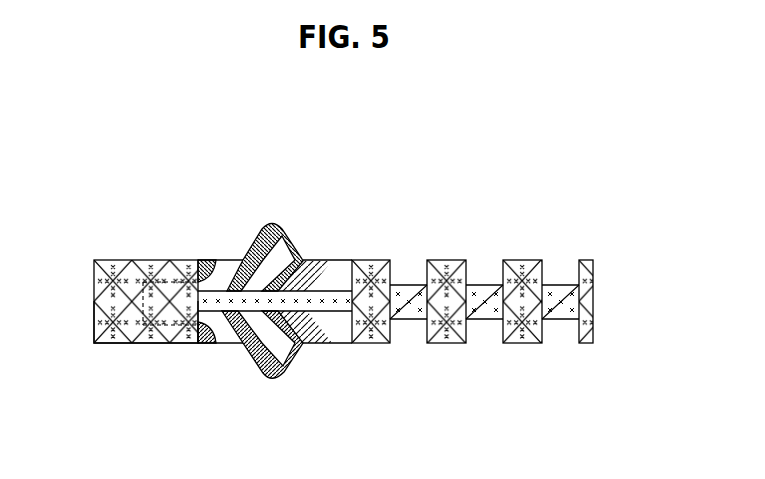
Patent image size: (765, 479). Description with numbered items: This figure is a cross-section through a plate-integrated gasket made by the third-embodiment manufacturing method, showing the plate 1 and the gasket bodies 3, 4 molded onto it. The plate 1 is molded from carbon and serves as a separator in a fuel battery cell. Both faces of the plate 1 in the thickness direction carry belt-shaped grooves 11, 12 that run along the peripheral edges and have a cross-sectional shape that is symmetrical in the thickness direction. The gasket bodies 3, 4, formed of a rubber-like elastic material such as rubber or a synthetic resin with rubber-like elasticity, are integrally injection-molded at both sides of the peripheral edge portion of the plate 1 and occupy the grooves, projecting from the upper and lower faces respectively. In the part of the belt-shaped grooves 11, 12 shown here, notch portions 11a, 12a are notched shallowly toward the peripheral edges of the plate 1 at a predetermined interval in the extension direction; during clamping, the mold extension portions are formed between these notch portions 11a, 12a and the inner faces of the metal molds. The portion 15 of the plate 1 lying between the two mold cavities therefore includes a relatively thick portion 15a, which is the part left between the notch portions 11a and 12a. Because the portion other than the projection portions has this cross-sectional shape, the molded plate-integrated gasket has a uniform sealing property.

The plate 1 is at (527, 262).
The gasket body 3 is at (292, 238).
The gasket body 4 is at (289, 378).
The belt-shaped groove 11 is at (213, 262).
The belt-shaped groove 12 is at (213, 345).
The notch portion 11a is at (163, 282).
The notch portion 12a is at (157, 345).
The portion between the cavities 15 is at (318, 263).
The thick portion 15a is at (179, 282).